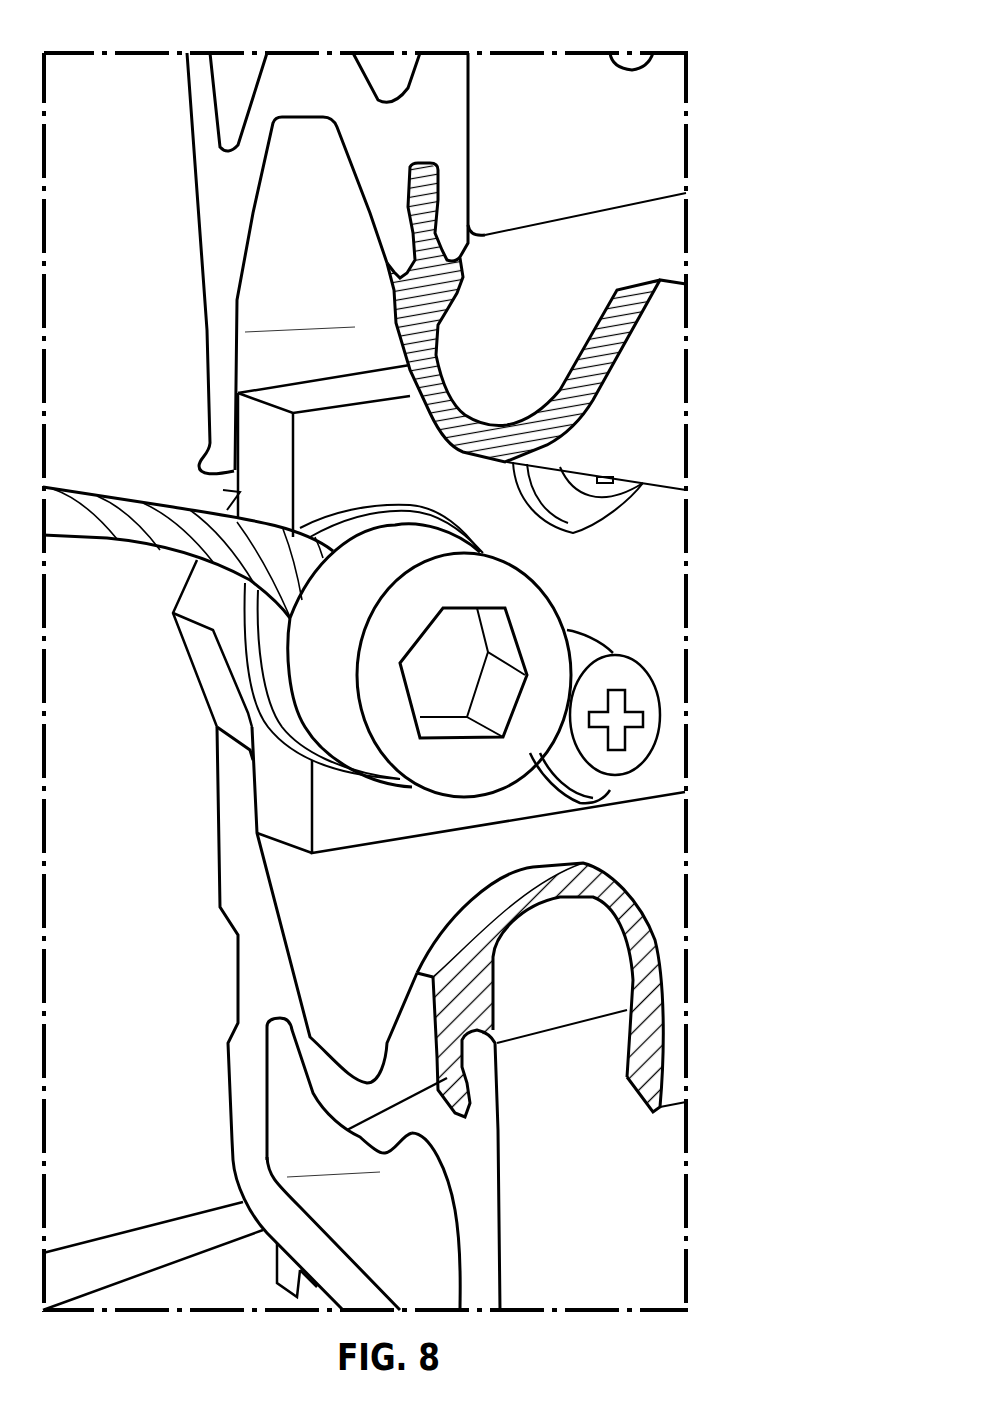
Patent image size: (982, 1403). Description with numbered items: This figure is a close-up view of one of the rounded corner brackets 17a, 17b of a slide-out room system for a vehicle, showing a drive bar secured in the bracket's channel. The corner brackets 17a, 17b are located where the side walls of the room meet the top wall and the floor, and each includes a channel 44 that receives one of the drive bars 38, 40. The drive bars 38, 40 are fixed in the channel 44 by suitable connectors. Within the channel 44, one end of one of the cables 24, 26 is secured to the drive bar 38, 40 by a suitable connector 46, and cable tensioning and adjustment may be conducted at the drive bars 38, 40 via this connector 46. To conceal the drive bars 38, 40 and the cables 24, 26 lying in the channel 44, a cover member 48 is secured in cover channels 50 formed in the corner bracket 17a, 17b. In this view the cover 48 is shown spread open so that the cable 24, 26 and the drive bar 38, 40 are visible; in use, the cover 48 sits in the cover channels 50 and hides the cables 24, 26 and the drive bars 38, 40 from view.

The first corner bracket 17a is at (365, 255).
The second corner bracket 17b is at (283, 82).
The cover channel 50 is at (410, 190).
The cover member 48 is at (520, 305).
The drive bar 38 is at (376, 609).
The drive bar 40 is at (327, 430).
The cable 24 is at (188, 558).
The cable 26 is at (160, 537).
The connector 46 is at (330, 690).
The channel 44 is at (317, 933).